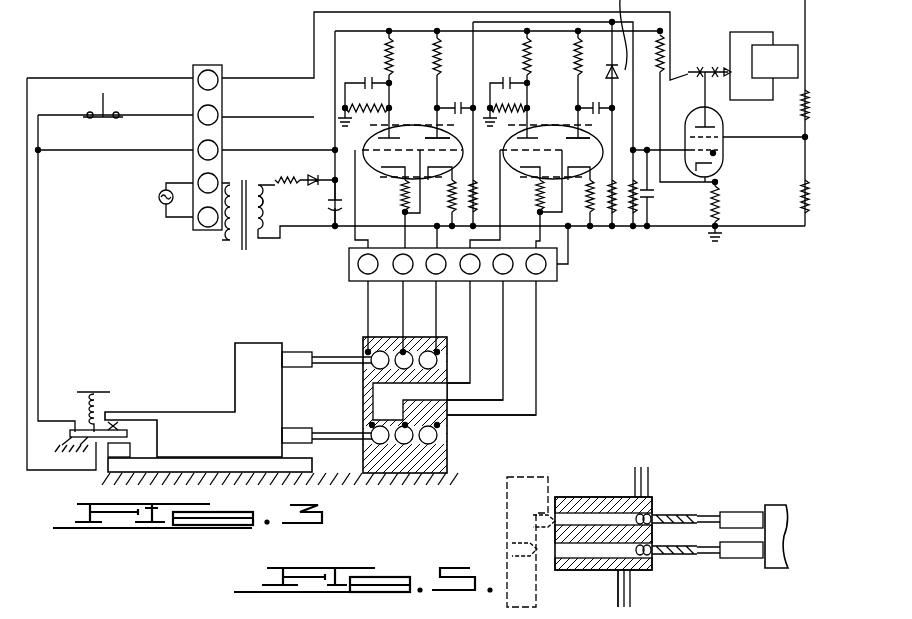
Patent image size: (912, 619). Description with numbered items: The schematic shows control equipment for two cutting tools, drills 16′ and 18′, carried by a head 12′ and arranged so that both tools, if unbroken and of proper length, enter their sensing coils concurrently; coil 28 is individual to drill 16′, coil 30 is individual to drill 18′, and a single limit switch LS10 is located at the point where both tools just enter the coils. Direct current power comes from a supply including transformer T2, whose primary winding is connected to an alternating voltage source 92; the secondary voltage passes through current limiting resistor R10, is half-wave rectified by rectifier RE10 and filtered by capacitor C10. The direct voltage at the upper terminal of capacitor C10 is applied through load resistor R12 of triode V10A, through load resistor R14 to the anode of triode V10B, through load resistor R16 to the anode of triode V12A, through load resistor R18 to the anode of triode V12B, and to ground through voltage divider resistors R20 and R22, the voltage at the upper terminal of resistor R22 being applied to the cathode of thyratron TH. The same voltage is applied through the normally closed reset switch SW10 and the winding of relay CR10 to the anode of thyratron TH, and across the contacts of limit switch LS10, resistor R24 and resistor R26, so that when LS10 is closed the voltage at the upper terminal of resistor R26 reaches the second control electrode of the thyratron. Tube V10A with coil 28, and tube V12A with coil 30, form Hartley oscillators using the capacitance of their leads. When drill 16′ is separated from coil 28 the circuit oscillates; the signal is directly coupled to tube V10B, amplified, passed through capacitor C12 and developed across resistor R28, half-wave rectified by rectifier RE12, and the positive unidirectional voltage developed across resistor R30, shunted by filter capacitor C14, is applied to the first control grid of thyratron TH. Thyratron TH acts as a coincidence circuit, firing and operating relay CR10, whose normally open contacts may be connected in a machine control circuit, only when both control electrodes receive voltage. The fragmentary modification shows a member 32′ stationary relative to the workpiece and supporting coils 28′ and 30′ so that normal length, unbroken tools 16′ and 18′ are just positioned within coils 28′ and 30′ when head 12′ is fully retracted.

In FIG. 3, the reset switch SW10 is at (108, 112).
In FIG. 3, the AC power source 92 is at (159, 197).
In FIG. 3, the transformer T2 is at (245, 252).
In FIG. 3, the rectifier RE10 is at (310, 177).
In FIG. 3, the current limiting resistor R10 is at (272, 190).
In FIG. 3, the capacitor C10 is at (330, 212).
In FIG. 3, the load resistor R12 is at (386, 50).
In FIG. 3, the load resistor R14 is at (433, 56).
In FIG. 3, the rectifier RE12 is at (523, 60).
In FIG. 3, the load resistor R16 is at (574, 60).
In FIG. 3, the load resistor R18 is at (452, 97).
In FIG. 3, the capacitor C12 is at (458, 99).
In FIG. 3, the triode V10A is at (380, 175).
In FIG. 3, the triode V10B is at (448, 125).
In FIG. 3, the triode V12A is at (515, 130).
In FIG. 3, the triode V12B is at (588, 125).
In FIG. 3, the resistor R28 is at (478, 197).
In FIG. 3, the voltage divider resistor R20 is at (672, 33).
In FIG. 3, the relay CR10 is at (700, 62).
In FIG. 3, the thyratron TH is at (725, 127).
In FIG. 3, the resistor R24 is at (800, 95).
In FIG. 3, the voltage divider resistor R22 is at (720, 201).
In FIG. 3, the resistor R26 is at (800, 206).
In FIG. 3, the filter capacitor C14 is at (655, 198).
In FIG. 3, the resistor R30 is at (622, 232).
In FIG. 3, the limit switch LS10 is at (101, 462).
In FIG. 3, the head 12′ is at (235, 372).
In FIG. 5, the head 12′ is at (778, 505).
In FIG. 3, the coil 28 is at (365, 383).
In FIG. 3, the drill 16′ is at (322, 356).
In FIG. 5, the drill 16′ is at (697, 515).
In FIG. 3, the drill 18′ is at (345, 421).
In FIG. 5, the drill 18′ is at (700, 557).
In FIG. 3, the coil 30 is at (448, 438).
In FIG. 5, the member 32′ is at (572, 500).
In FIG. 5, the coil 28′ is at (655, 510).
In FIG. 5, the coil 30′ is at (630, 562).